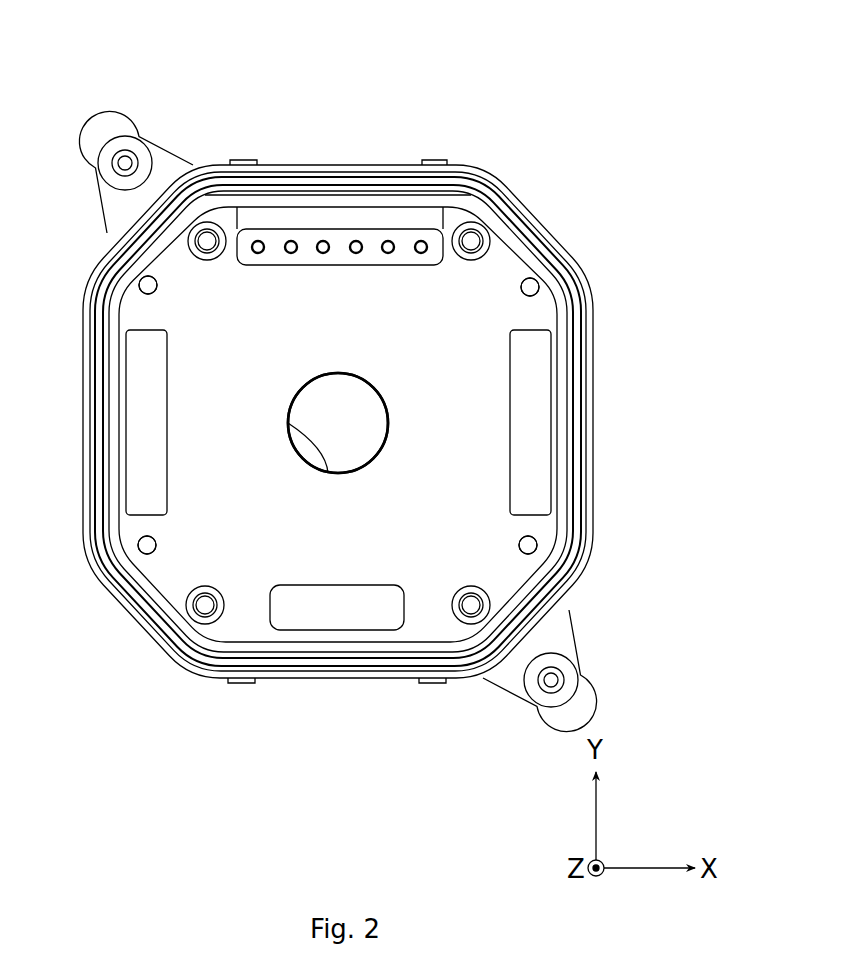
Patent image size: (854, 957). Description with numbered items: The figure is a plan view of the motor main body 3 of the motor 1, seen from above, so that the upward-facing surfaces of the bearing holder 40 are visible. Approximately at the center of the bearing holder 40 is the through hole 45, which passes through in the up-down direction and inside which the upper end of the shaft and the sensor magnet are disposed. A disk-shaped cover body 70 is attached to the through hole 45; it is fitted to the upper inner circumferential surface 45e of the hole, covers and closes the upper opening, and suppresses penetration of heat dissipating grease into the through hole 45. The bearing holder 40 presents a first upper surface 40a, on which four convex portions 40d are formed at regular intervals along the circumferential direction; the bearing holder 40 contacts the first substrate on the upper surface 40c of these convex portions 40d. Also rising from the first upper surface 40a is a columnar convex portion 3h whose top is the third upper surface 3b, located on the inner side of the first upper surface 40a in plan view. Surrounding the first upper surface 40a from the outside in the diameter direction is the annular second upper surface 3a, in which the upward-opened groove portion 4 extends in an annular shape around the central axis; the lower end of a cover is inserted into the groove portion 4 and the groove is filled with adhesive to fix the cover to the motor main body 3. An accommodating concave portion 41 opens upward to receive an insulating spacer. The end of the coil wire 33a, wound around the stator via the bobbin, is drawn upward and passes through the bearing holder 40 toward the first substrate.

The motor 1 is at (456, 92).
The motor main body 3 is at (499, 166).
The second upper surface (sealing surface) 3a is at (541, 265).
The third upper surface (first contact surface) 3b is at (147, 285).
The columnar convex portion 3h is at (142, 282).
The groove portion 4 is at (284, 180).
The coil wire 33a is at (421, 241).
The bearing holder 40 is at (527, 185).
The first upper surface 40a is at (508, 263).
The upper surface (fourth upper surface) of convex portions 40c is at (207, 222).
The convex portions 40d is at (219, 230).
The accommodating concave portion 41 is at (127, 484).
The through hole 45 is at (354, 457).
The upper inner circumferential surface 45e is at (312, 394).
The cover body 70 is at (357, 467).